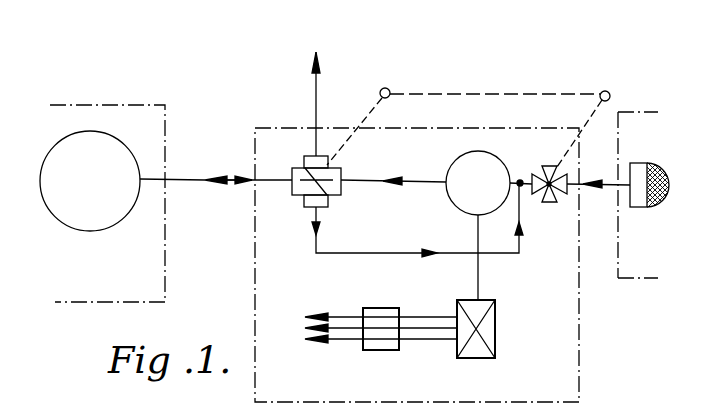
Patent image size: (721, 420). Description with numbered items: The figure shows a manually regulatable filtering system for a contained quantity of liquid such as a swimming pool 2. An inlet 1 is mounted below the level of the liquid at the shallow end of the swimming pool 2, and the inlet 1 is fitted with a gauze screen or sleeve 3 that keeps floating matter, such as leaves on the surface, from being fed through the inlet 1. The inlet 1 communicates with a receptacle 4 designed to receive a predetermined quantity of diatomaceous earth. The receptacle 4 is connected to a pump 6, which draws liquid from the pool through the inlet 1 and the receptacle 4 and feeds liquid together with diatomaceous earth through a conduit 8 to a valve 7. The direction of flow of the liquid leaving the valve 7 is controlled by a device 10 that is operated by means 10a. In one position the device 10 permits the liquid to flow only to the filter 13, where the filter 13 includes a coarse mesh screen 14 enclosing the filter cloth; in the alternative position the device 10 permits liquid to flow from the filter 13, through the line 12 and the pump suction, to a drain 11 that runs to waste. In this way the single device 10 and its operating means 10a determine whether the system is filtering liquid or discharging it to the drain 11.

The inlet 1 is at (655, 207).
The swimming pool 2 is at (630, 279).
The gauze screen or sleeve 3 is at (662, 166).
The receptacle 4 is at (637, 165).
The pump 6 is at (495, 158).
The valve 7 is at (558, 167).
The conduit 8 is at (611, 186).
The device 10 is at (292, 172).
The operating means 10a is at (475, 85).
The drain 11 is at (316, 103).
The line 12 is at (403, 256).
The filter 13 is at (105, 142).
The coarse mesh screen 14 is at (139, 160).